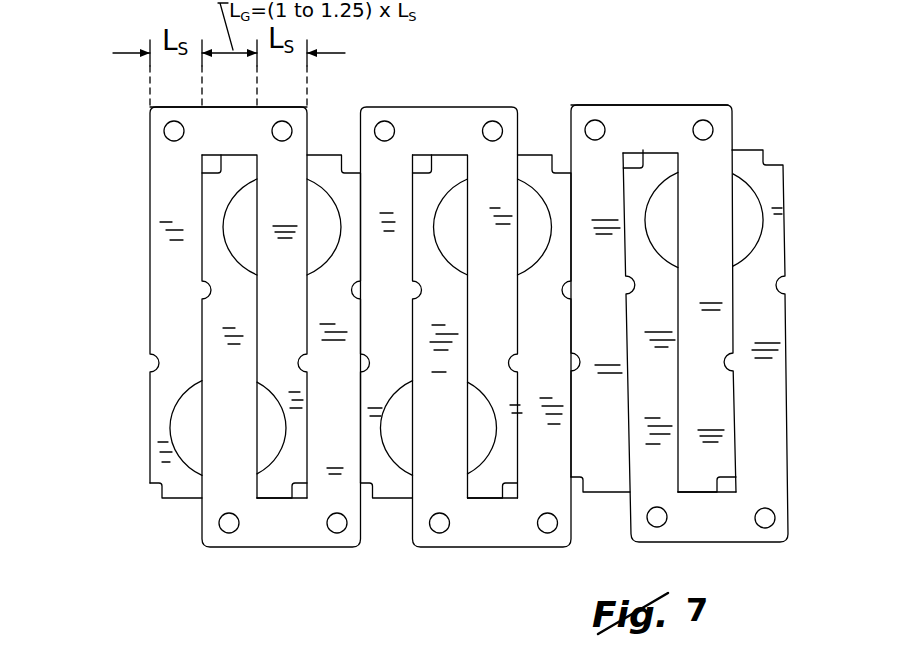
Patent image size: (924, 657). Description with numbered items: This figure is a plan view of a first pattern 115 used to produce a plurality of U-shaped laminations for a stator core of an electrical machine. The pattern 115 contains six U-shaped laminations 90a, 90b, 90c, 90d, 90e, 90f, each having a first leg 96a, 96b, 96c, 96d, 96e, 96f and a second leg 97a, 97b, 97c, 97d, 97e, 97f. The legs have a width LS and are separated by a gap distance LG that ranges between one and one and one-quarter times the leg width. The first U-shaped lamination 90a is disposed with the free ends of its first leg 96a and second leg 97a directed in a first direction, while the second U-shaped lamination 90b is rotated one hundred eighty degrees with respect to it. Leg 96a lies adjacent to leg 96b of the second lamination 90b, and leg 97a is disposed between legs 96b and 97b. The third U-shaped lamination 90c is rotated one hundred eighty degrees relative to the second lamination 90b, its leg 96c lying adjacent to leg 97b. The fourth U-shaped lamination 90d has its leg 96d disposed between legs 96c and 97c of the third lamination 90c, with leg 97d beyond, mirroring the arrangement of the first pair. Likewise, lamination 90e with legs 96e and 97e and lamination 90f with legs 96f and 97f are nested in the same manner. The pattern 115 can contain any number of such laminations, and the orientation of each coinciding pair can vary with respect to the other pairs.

The first U-shaped lamination 90a is at (163, 182).
The second U-shaped lamination 90b is at (297, 537).
The third U-shaped lamination 90c is at (430, 133).
The fourth U-shaped lamination 90d is at (508, 535).
The U-shaped lamination 90e is at (710, 175).
The U-shaped lamination 90f is at (712, 530).
The first leg 96a is at (198, 319).
The first leg 96b is at (248, 403).
The first leg 96c is at (410, 343).
The first leg 96d is at (465, 448).
The first leg 96e is at (622, 425).
The first leg 96f is at (678, 393).
The second leg 97a is at (303, 319).
The second leg 97b is at (356, 403).
The second leg 97c is at (518, 343).
The second leg 97d is at (568, 475).
The second leg 97e is at (731, 416).
The second leg 97f is at (787, 415).
The first pattern 115 is at (140, 511).